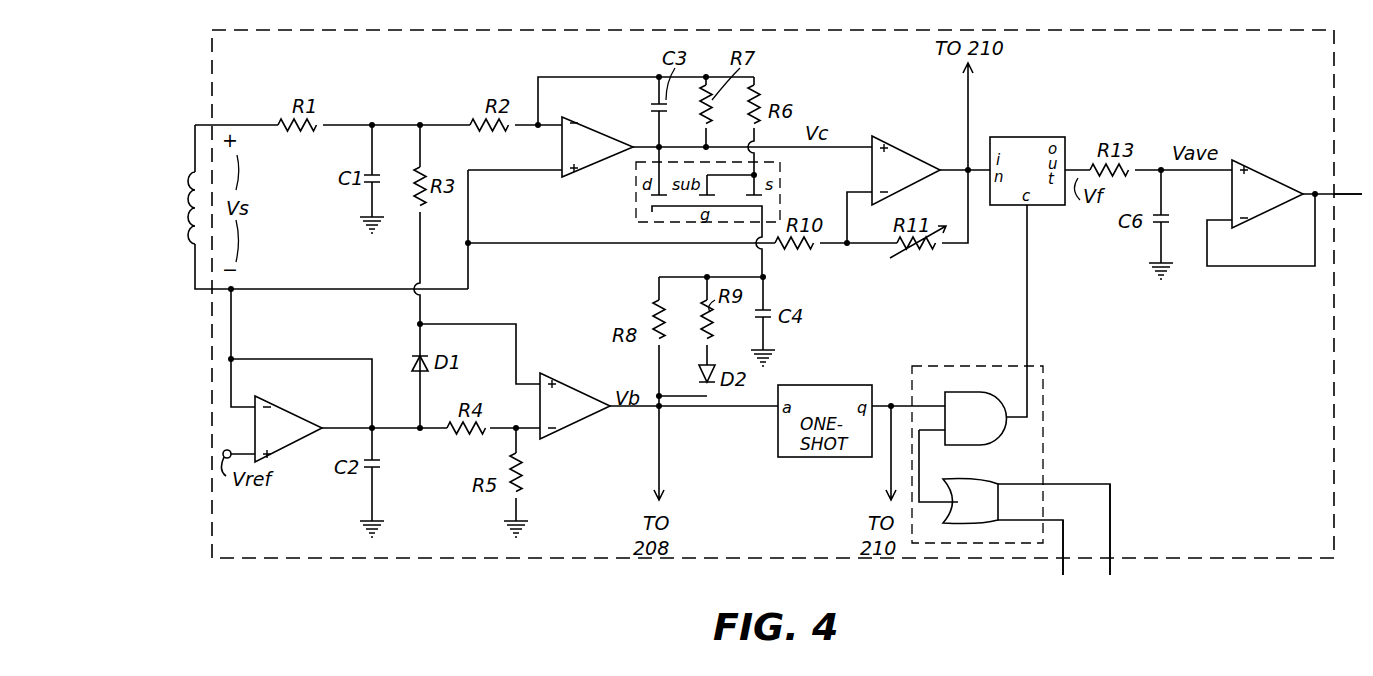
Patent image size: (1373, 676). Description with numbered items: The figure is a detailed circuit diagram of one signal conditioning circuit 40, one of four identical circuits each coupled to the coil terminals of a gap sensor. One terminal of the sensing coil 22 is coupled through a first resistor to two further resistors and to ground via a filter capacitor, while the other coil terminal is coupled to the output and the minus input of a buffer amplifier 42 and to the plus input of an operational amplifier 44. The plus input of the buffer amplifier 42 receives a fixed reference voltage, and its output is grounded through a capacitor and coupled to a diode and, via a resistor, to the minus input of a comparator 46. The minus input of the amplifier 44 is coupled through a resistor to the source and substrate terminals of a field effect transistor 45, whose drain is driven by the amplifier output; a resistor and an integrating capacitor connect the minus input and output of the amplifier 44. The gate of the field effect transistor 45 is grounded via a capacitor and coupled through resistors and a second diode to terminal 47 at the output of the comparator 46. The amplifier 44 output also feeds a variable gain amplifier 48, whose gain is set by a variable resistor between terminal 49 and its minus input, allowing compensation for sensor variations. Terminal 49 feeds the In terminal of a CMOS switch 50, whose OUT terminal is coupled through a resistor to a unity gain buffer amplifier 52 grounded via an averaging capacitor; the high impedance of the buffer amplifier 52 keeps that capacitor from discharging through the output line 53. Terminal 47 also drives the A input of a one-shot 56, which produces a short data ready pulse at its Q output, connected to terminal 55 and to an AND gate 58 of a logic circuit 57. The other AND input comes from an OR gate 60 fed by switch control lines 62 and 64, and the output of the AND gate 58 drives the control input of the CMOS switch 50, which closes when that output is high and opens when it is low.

The sensing coil 22 is at (188, 176).
The signal conditioning circuit 40 is at (799, 566).
The buffer amplifier 42 is at (282, 408).
The operational amplifier 44 is at (590, 128).
The field effect transistor 45 is at (636, 216).
The comparator 46 is at (566, 384).
The terminal 47 is at (662, 412).
The variable gain amplifier 48 is at (900, 143).
The terminal 49 is at (966, 175).
The CMOS switch 50 is at (1008, 137).
The unity gain buffer amplifier 52 is at (1254, 170).
The output line 53 is at (1339, 193).
The terminal 55 is at (893, 402).
The one-shot 56 is at (830, 385).
The logic circuit 57 is at (1046, 392).
The AND gate 58 is at (978, 392).
The OR gate 60 is at (975, 480).
The switch control line 62 is at (1063, 557).
The switch control line 64 is at (1110, 557).